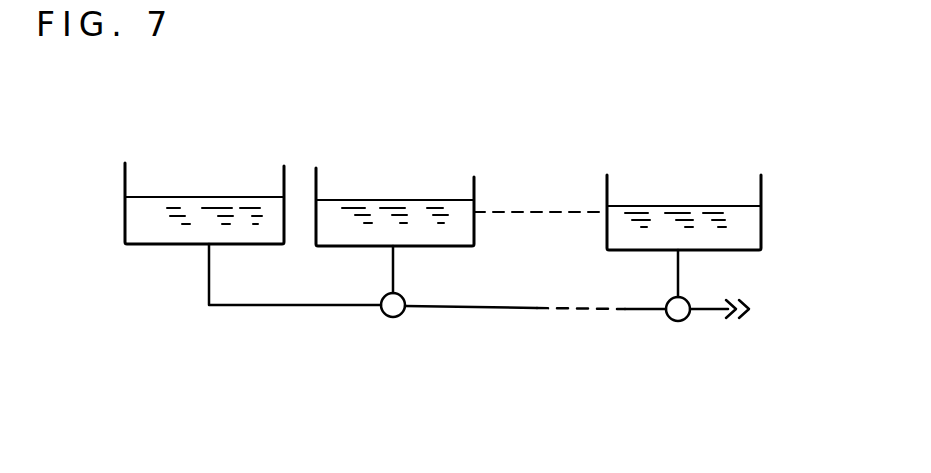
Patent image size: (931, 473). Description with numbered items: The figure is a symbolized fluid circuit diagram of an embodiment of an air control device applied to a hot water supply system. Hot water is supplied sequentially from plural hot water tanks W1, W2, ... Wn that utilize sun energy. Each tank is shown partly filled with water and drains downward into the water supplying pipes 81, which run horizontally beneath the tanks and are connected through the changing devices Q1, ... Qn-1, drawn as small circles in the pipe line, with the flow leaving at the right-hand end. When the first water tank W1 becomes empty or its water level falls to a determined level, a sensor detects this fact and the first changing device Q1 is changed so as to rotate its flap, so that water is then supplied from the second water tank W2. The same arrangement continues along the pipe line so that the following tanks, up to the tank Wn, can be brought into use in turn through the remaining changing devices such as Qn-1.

The first hot water tank W1 is at (234, 166).
The second hot water tank W2 is at (427, 171).
The n-th hot water tank Wn is at (716, 172).
The water supplying pipe 81 is at (270, 308).
The first changing device Q1 is at (393, 317).
The (n-1)-th changing device Qn-1 is at (677, 321).